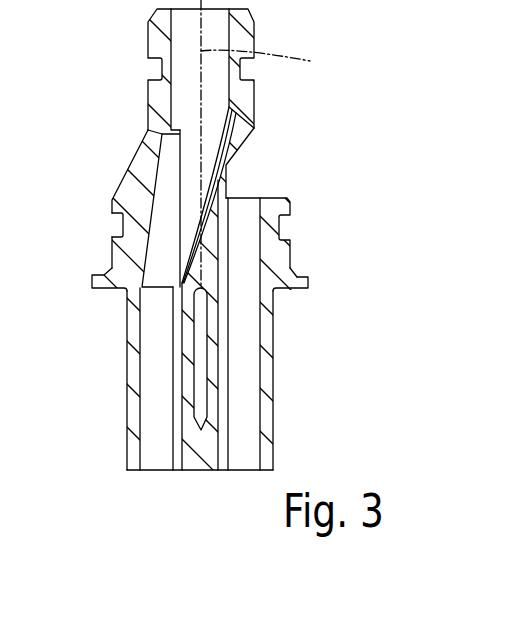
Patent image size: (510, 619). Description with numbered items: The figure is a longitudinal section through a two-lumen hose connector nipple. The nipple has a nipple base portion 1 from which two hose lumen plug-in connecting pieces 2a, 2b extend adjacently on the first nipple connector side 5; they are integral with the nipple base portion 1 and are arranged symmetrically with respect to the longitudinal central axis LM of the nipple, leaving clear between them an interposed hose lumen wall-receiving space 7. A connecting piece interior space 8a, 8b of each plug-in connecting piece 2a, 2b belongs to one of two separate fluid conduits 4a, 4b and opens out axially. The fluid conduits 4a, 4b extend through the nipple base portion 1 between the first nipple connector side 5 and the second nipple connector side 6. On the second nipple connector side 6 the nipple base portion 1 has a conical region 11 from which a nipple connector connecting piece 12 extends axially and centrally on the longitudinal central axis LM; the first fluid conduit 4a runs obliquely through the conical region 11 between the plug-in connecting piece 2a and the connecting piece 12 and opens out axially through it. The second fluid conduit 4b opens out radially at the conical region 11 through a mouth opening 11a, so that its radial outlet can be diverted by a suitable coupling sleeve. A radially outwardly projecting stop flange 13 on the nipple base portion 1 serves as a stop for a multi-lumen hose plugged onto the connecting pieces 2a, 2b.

The nipple base portion 1 is at (122, 223).
The hose lumen plug-in connecting piece 2a is at (140, 380).
The hose lumen plug-in connecting piece 2b is at (265, 398).
The first fluid conduit 4a is at (158, 292).
The second fluid conduit 4b is at (245, 232).
The first nipple connector side 5 is at (273, 298).
The second nipple connector side 6 is at (252, 127).
The hose lumen wall-receiving space 7 is at (200, 432).
The connecting piece interior space 8a is at (152, 408).
The connecting piece interior space 8b is at (245, 349).
The conical region 11 is at (122, 178).
The mouth opening 11a is at (250, 175).
The nipple connector connecting piece 12 is at (243, 97).
The stop flange 13 is at (298, 282).
The longitudinal central axis LM is at (275, 61).